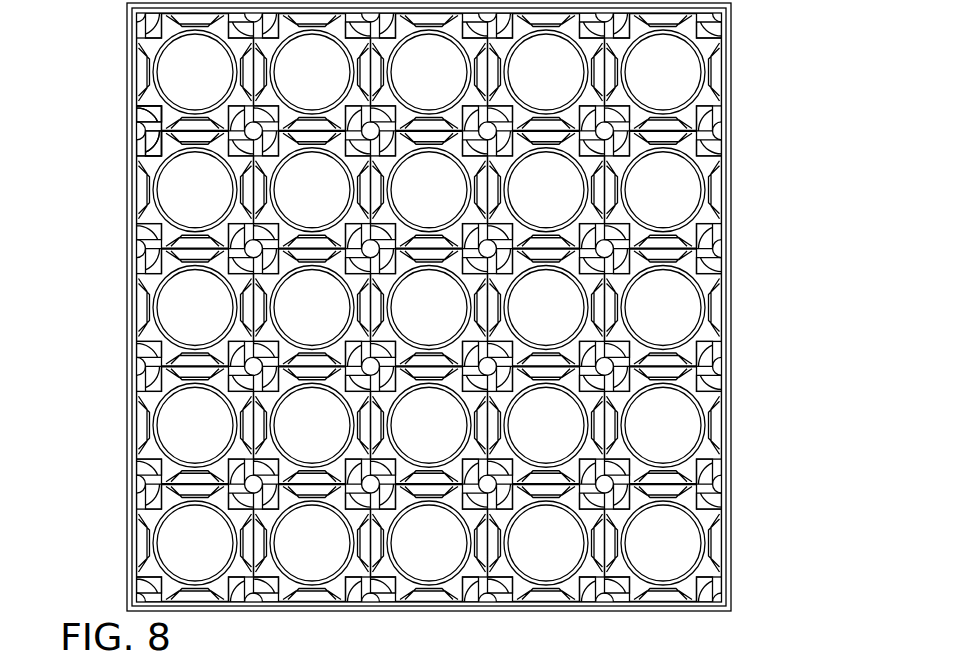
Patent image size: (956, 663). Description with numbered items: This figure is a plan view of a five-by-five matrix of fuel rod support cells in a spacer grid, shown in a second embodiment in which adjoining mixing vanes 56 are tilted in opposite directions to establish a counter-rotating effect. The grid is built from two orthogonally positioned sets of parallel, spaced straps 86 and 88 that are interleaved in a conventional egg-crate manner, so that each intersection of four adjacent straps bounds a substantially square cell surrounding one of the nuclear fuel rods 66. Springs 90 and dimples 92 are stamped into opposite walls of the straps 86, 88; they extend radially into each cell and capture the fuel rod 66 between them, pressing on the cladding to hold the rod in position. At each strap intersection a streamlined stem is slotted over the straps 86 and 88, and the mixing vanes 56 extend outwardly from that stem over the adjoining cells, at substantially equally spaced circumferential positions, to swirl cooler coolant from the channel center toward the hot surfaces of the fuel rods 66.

The mixing vanes 56 is at (712, 383).
The fuel rods 66 is at (712, 164).
The strap 86 is at (245, 188).
The strap 88 is at (148, 130).
The springs 90 is at (603, 592).
The dimples 92 is at (491, 592).